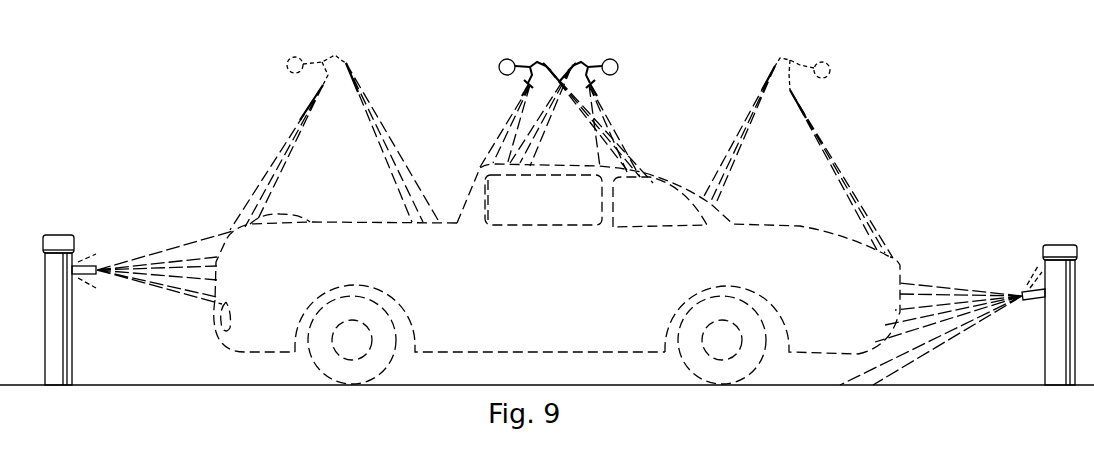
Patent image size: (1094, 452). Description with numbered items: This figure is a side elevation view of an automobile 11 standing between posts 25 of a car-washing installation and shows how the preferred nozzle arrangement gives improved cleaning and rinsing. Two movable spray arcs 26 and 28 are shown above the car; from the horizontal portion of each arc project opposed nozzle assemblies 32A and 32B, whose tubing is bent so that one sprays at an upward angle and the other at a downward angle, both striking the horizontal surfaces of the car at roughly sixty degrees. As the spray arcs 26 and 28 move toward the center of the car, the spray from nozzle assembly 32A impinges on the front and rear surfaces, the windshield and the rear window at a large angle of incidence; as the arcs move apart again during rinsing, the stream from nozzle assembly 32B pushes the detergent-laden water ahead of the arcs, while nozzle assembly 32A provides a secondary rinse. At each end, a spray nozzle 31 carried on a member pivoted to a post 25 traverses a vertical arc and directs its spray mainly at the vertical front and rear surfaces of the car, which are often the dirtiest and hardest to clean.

The vehicle 11 is at (772, 226).
The post 25 is at (72, 340).
The spray arc 26 is at (296, 57).
The spray arc 28 is at (616, 62).
The spray nozzle 31 is at (90, 262).
The nozzle assembly 32A is at (542, 61).
The nozzle assembly 32B is at (522, 80).